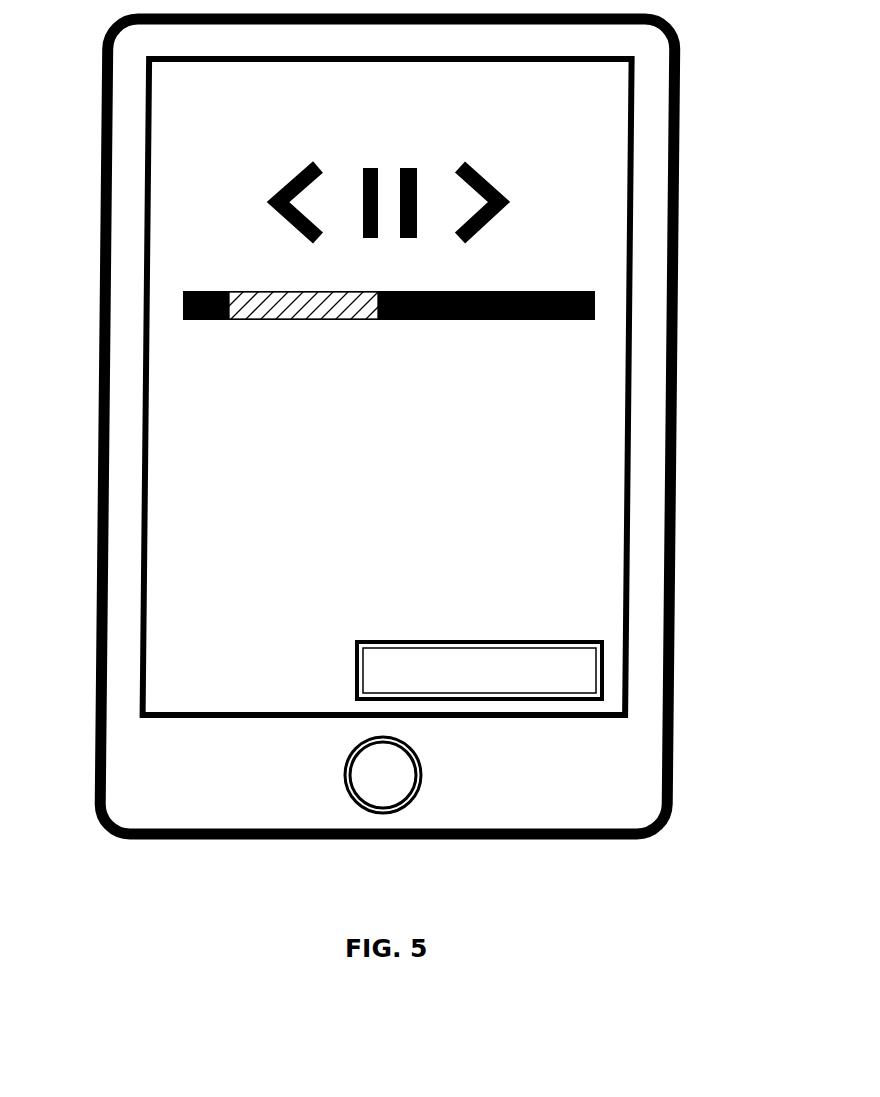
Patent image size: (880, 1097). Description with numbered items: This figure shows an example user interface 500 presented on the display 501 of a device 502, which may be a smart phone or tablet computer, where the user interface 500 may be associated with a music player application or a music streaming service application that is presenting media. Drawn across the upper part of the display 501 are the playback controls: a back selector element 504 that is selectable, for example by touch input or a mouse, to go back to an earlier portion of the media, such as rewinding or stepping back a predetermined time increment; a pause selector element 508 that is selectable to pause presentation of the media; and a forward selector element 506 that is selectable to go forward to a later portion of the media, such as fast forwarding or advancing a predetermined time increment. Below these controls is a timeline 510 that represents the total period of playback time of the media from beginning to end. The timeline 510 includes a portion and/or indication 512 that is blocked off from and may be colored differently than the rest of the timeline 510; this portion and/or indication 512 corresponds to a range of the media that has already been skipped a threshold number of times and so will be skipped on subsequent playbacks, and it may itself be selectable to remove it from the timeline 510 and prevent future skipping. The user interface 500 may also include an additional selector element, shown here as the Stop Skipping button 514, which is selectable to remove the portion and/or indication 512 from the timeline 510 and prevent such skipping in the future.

The user interface 500 is at (555, 150).
The display 501 is at (262, 468).
The device 502 is at (677, 31).
The back selector element 504 is at (290, 174).
The forward selector element 506 is at (481, 174).
The pause selector element 508 is at (398, 164).
The timeline 510 is at (595, 325).
The portion and/or indication 512 is at (378, 291).
The Stop Skipping button 514 is at (487, 642).